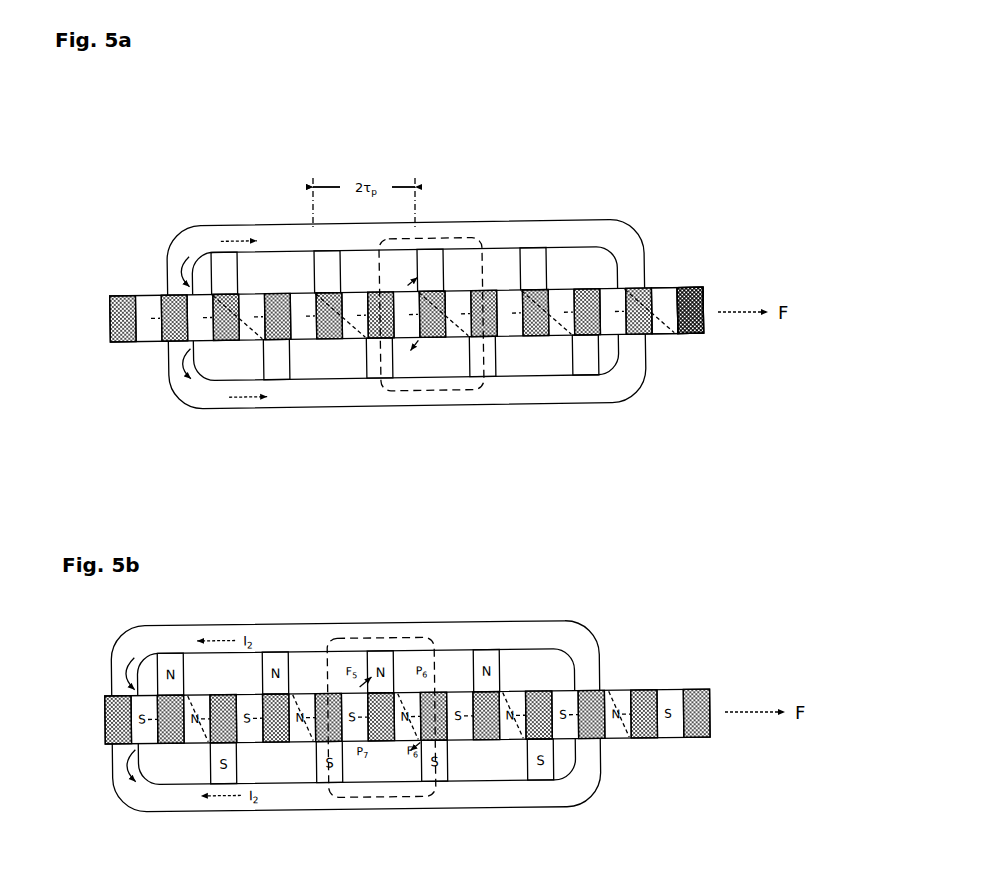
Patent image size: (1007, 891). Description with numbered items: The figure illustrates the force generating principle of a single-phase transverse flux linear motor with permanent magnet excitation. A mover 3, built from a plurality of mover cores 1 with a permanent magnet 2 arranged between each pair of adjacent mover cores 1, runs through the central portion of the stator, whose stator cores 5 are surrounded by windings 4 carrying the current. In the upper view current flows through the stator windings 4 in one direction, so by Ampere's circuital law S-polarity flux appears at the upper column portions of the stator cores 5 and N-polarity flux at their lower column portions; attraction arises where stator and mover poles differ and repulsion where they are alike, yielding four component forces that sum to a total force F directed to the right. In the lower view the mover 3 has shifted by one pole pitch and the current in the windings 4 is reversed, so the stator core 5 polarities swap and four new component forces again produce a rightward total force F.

The mover core 1 is at (663, 295).
The permanent magnet 2 is at (704, 286).
The mover 3 is at (689, 327).
The winding 4 is at (587, 232).
The stator core 5 is at (535, 252).